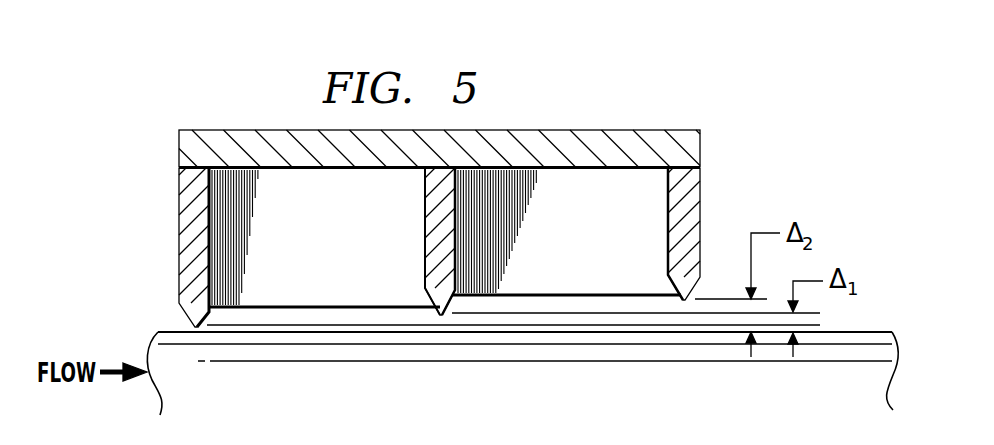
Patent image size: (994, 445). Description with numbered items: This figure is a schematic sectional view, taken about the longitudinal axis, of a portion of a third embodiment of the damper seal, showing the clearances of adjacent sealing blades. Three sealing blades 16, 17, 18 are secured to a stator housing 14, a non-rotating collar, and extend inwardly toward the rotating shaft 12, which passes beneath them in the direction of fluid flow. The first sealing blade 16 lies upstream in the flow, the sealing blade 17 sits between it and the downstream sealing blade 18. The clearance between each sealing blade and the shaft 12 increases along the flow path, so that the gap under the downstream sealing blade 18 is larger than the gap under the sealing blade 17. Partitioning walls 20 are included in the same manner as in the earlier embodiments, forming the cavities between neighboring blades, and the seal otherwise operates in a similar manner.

The shaft 12 is at (339, 397).
The stator housing 14 is at (606, 130).
The upstream sealing blade 16 is at (179, 207).
The sealing blade 17 is at (425, 254).
The downstream sealing blade 18 is at (700, 196).
The partitioning walls 20 is at (341, 229).